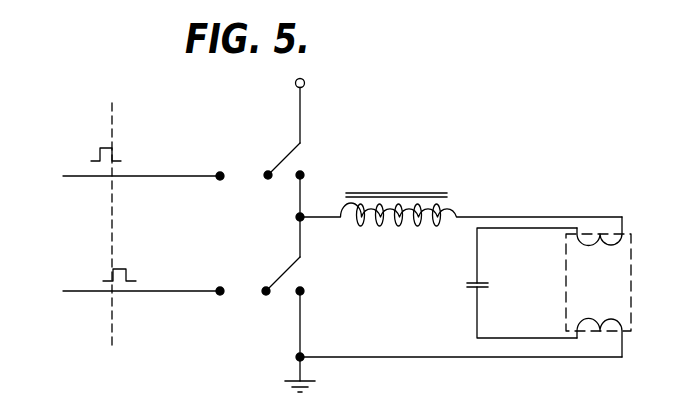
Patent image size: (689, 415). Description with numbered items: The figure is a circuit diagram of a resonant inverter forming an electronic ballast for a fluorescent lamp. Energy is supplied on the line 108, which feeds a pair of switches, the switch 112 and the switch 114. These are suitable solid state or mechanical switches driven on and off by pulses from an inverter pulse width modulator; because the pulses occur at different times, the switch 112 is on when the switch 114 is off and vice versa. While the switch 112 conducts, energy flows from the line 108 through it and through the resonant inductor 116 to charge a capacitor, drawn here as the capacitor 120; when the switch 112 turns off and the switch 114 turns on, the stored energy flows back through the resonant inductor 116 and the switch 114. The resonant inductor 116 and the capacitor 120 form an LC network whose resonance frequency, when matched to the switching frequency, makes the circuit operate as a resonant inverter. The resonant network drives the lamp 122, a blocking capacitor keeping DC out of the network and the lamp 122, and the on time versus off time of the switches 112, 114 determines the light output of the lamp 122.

The line 108 is at (300, 103).
The switch 112 is at (290, 158).
The switch 114 is at (285, 283).
The resonant inductor 116 is at (390, 192).
The capacitor 120 is at (470, 283).
The lamp 122 is at (620, 277).